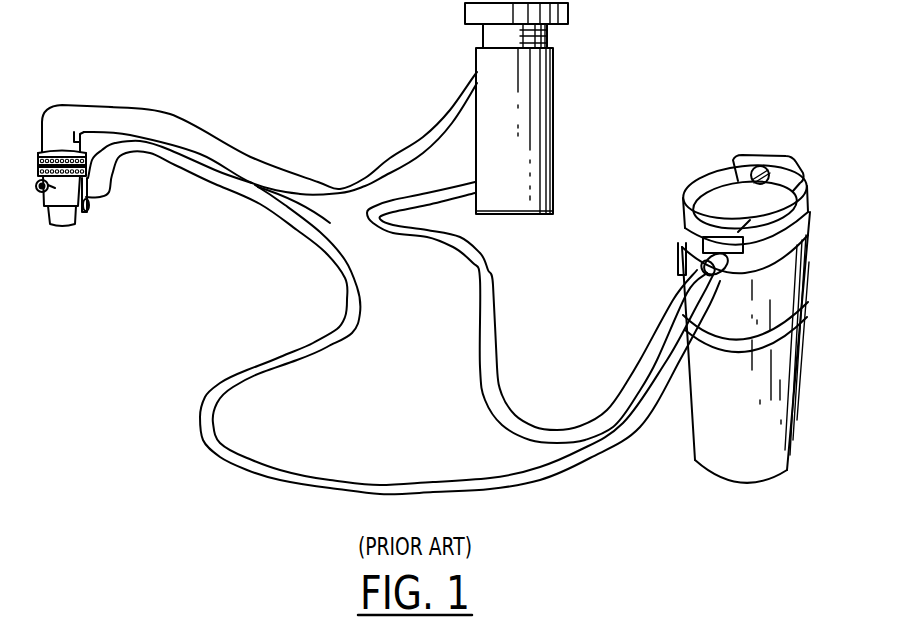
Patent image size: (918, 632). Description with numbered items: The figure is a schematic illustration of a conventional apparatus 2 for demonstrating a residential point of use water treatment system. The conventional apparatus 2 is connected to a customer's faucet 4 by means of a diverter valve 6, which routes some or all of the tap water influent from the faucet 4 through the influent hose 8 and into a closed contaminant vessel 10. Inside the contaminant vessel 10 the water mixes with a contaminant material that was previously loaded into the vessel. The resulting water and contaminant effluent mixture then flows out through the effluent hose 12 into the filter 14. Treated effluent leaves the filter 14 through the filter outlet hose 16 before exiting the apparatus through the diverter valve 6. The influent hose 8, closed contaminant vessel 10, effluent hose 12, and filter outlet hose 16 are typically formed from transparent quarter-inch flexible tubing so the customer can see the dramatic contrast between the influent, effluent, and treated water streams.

The conventional apparatus 2 is at (186, 493).
The faucet 4 is at (86, 103).
The diverter valve 6 is at (60, 227).
The influent hose 8 is at (415, 131).
The closed contaminant vessel 10 is at (560, 104).
The effluent hose 12 is at (497, 313).
The filter 14 is at (723, 447).
The filter outlet hose 16 is at (384, 480).